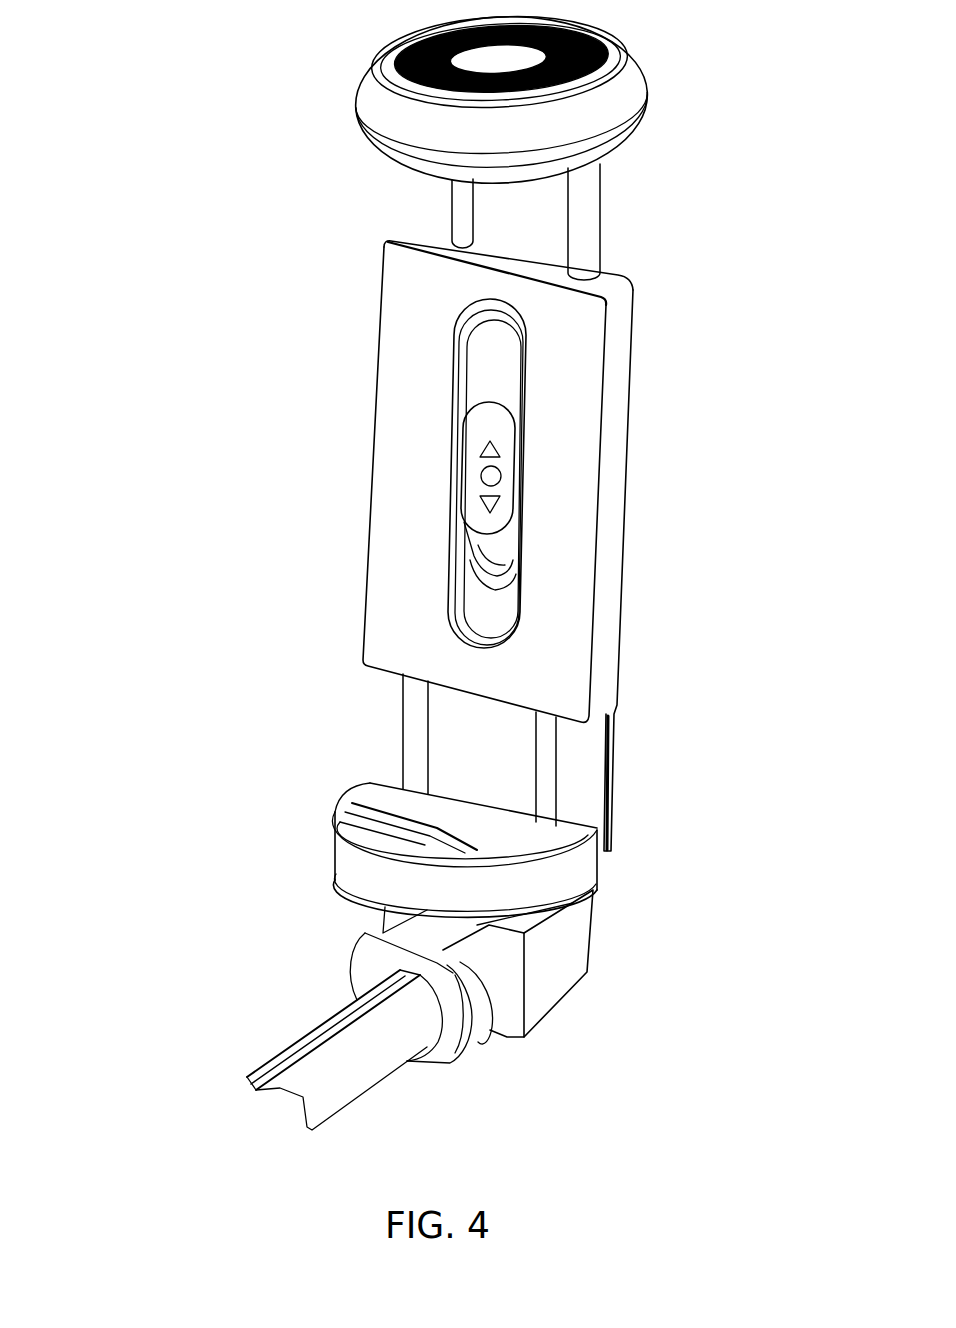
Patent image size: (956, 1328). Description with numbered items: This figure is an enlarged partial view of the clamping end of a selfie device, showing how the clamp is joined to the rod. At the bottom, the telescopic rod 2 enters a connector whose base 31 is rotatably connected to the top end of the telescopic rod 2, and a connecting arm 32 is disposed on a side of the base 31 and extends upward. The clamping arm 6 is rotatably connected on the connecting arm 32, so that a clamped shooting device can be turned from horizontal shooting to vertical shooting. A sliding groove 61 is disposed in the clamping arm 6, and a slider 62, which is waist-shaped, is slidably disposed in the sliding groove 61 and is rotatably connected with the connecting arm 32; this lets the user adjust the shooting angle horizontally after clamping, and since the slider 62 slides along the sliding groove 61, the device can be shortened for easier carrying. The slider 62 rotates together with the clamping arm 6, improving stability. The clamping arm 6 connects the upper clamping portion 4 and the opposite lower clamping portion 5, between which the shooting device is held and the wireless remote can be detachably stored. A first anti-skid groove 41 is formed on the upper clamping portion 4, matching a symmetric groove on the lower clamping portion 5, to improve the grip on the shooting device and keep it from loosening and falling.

The telescopic rod 2 is at (356, 1062).
The upper clamping portion 4 is at (374, 873).
The first anti-skid groove 41 is at (380, 800).
The lower clamping portion 5 is at (407, 114).
The clamping arm 6 is at (412, 531).
The sliding groove 61 is at (508, 470).
The slider 62 is at (458, 630).
The base 31 is at (560, 968).
The connecting arm 32 is at (573, 770).